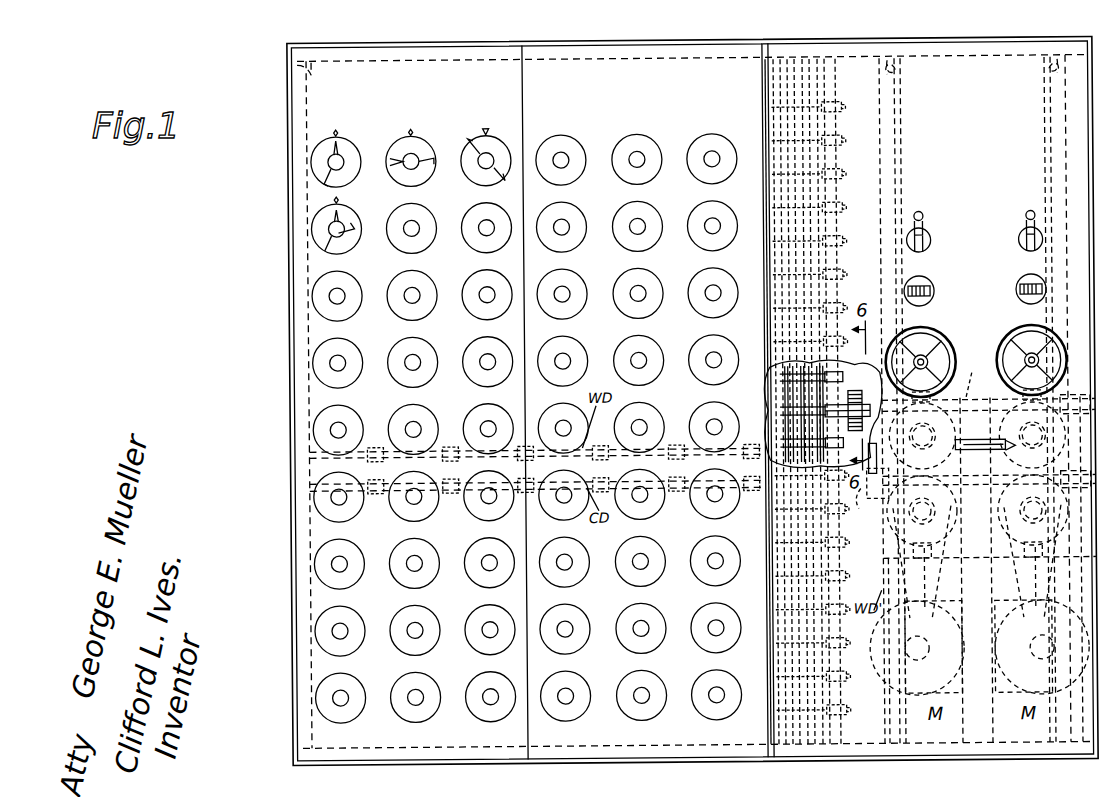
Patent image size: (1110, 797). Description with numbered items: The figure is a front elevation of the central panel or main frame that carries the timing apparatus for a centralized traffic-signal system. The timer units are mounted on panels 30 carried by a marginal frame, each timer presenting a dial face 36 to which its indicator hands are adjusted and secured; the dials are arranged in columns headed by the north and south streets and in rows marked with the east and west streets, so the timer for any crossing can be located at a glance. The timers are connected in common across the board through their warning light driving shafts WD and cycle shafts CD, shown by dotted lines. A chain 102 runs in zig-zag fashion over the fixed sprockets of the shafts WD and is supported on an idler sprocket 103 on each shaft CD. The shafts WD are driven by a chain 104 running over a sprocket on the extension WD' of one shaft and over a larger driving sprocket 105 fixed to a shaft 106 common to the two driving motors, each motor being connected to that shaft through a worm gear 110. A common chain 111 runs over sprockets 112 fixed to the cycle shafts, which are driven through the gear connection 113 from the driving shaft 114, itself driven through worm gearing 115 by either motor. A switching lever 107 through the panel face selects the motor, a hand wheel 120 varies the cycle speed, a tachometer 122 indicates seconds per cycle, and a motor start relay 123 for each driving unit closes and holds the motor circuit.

The panel 30 is at (343, 76).
The dial face 36 is at (406, 209).
The chain 102 is at (812, 96).
The idler sprocket 103 is at (820, 425).
The chain 104 is at (868, 502).
The driving sprocket 105 is at (851, 422).
The shaft 106 is at (988, 478).
The switching lever 107 is at (968, 443).
The worm gear 110 is at (979, 600).
The common chain 111 is at (800, 97).
The sprocket 112 is at (782, 404).
The gear connection 113 is at (858, 400).
The driving shaft 114 is at (977, 374).
The worm gearing 115 is at (1029, 452).
The hand wheel 120 is at (1012, 338).
The tachometer 122 is at (936, 293).
The motor start relay 123 is at (924, 218).